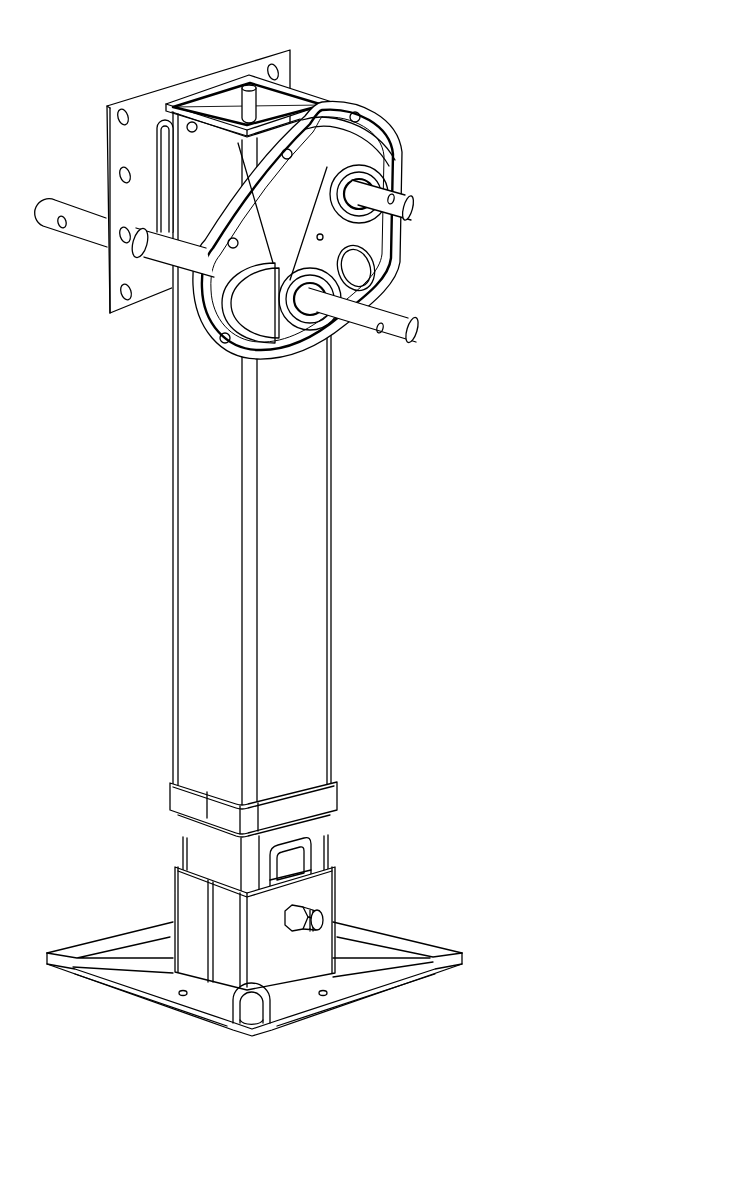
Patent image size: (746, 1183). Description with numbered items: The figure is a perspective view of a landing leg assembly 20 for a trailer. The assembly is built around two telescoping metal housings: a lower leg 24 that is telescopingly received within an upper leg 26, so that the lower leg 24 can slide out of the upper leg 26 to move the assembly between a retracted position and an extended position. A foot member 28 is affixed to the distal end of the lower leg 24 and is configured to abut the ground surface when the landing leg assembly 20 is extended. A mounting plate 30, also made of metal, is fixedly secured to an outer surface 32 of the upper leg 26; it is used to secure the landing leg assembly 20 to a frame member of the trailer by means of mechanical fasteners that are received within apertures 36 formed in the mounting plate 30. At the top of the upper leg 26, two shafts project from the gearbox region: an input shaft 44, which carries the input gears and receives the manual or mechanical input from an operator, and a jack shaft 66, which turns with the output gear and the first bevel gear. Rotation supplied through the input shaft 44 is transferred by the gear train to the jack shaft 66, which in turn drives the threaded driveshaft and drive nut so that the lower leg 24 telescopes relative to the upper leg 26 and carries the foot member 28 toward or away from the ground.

The landing leg assembly 20 is at (405, 43).
The lower leg 24 is at (327, 842).
The upper leg 26 is at (331, 587).
The foot member 28 is at (377, 937).
The mounting plate 30 is at (183, 77).
The outer surface 32 is at (173, 507).
The apertures 36 is at (126, 110).
The input shaft 44 is at (388, 341).
The jack shaft 66 is at (406, 190).